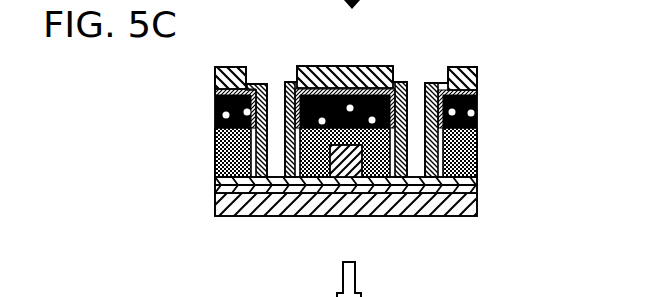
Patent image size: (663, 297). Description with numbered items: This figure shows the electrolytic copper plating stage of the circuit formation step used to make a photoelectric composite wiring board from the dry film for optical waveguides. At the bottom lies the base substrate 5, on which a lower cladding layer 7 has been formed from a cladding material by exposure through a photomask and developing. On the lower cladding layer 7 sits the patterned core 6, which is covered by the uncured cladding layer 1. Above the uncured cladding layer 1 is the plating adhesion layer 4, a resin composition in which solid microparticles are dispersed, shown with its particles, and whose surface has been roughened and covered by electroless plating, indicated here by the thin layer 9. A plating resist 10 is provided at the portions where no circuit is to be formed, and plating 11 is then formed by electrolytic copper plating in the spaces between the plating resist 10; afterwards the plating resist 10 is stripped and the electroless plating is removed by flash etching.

The uncured cladding layer 1 is at (477, 146).
The plating adhesion layer 4 is at (472, 113).
The base substrate 5 is at (477, 199).
The core 6 is at (330, 160).
The lower cladding layer 7 is at (477, 183).
The thin liner layer 9 is at (472, 94).
The plating resist 10 is at (462, 67).
The plating 11 is at (437, 83).